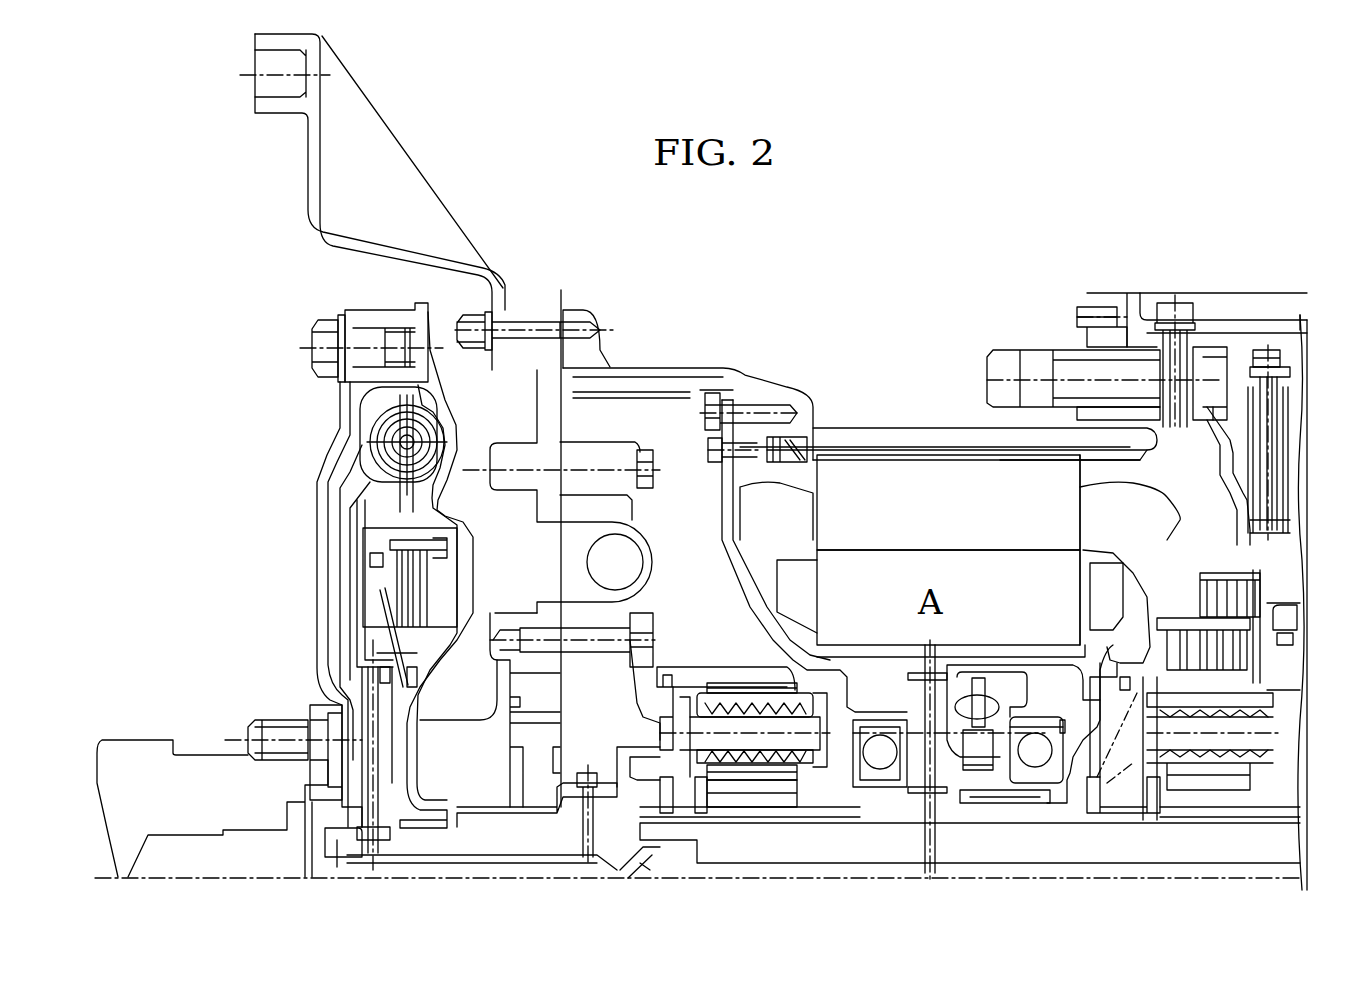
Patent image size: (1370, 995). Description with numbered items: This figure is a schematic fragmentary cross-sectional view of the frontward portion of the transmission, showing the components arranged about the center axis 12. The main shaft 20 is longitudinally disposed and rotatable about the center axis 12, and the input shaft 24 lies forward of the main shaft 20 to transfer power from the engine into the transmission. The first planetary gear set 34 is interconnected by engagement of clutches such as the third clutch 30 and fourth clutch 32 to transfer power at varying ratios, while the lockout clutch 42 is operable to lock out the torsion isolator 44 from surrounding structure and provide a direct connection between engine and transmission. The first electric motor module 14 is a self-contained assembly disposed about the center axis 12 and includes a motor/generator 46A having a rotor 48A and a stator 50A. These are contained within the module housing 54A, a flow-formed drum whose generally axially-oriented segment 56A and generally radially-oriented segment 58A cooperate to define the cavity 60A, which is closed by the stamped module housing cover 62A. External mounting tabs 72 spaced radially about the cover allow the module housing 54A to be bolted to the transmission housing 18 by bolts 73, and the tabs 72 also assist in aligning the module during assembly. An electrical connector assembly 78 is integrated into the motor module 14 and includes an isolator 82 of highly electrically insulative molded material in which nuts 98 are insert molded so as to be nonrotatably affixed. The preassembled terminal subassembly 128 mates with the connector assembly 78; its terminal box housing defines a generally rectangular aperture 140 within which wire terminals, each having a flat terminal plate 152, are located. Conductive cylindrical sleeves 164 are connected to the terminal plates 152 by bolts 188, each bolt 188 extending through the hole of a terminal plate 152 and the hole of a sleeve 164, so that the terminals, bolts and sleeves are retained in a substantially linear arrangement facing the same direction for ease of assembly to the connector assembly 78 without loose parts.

The center axis 12 is at (172, 880).
The first electric motor module 14 is at (707, 556).
The transmission housing 18 is at (753, 378).
The main shaft 20 is at (1003, 843).
The input shaft 24 is at (340, 843).
The third clutch 30 is at (1143, 590).
The fourth clutch 32 is at (1227, 643).
The first planetary gear set 34 is at (725, 797).
The lockout clutch 42 is at (397, 577).
The torsion isolator 44 is at (375, 425).
The motor/generator 46A is at (810, 473).
The rotor 48A is at (978, 565).
The stator 50A is at (848, 472).
The module housing 54A is at (1133, 550).
The axially-oriented segment 56A is at (1007, 447).
The radially-oriented segment 58A is at (1253, 570).
The cavity 60A is at (1077, 698).
The module housing cover 62A is at (740, 437).
The mounting tabs 72 is at (728, 388).
The bolts 73 is at (705, 395).
The electrical connector assembly 78 is at (1217, 360).
The isolator 82 is at (1287, 535).
The nuts 98 is at (1300, 517).
The terminal subassembly 128 is at (1289, 296).
The rectangular aperture 140 is at (1237, 343).
The terminal plate 152 is at (1283, 377).
The cylindrical sleeve 164 is at (1280, 412).
The bolts 188 is at (1280, 357).